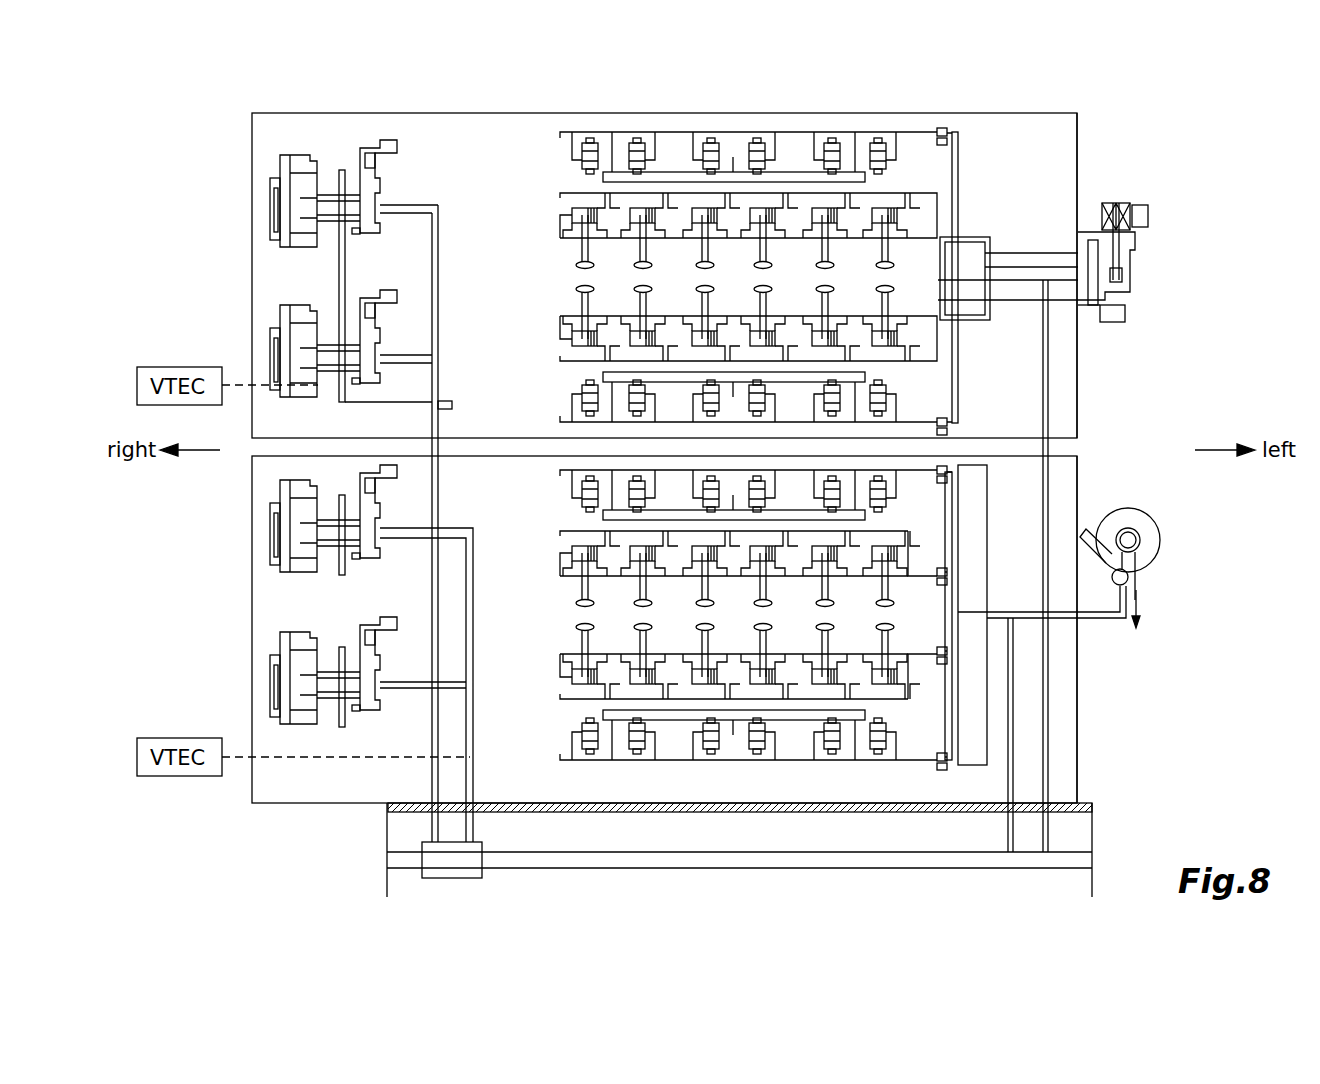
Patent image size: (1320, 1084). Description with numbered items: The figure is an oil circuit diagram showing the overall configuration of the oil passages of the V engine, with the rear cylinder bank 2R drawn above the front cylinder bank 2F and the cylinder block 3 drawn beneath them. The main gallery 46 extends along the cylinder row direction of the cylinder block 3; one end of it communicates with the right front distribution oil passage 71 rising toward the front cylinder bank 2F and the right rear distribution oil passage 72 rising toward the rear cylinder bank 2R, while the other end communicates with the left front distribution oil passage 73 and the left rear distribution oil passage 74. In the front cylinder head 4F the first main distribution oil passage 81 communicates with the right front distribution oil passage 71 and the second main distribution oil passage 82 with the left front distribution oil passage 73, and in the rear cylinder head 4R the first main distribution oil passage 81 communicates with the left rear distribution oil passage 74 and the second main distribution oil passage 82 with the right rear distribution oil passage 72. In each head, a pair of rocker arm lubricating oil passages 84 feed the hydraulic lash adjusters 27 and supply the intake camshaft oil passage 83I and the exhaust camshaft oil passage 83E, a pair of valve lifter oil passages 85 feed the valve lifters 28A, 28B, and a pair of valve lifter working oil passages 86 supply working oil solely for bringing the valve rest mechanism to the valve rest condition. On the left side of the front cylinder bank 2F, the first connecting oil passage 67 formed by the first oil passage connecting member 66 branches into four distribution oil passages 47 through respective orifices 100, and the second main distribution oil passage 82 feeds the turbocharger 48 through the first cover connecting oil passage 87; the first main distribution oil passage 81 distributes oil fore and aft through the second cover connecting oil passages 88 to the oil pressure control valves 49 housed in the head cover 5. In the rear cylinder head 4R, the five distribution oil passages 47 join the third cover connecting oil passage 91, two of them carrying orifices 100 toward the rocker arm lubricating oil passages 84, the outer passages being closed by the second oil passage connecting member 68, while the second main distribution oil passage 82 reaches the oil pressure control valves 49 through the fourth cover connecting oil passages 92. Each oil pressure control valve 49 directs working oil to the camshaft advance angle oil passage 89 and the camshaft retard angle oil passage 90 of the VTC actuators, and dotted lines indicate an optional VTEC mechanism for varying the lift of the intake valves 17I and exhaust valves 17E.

The rear cylinder bank 2R is at (1083, 128).
The front cylinder bank 2F is at (1086, 468).
The cylinder block 3 is at (1092, 830).
The rear cylinder head 4R is at (1080, 345).
The front cylinder head 4F is at (1080, 763).
The head cover 5 is at (710, 451).
The exhaust valve 17E is at (576, 265).
The intake valve 17I is at (576, 289).
The hydraulic lash adjuster 27 is at (757, 158).
The valve lifter 28A is at (700, 226).
The valve lifter 28B is at (700, 565).
The main gallery 46 is at (755, 853).
The distribution oil passage 47 is at (912, 138).
The turbocharger 48 is at (1150, 526).
The oil pressure control valve 49 is at (382, 192).
The first oil passage connecting member 66 is at (990, 518).
The first connecting oil passage 67 is at (974, 602).
The second oil passage connecting member 68 is at (348, 282).
The right front distribution oil passage 71 is at (473, 830).
The right rear distribution oil passage 72 is at (432, 833).
The left front distribution oil passage 73 is at (1008, 830).
The left rear distribution oil passage 74 is at (1043, 823).
The first main distribution oil passage 81 is at (1048, 402).
The second main distribution oil passage 82 is at (432, 422).
The exhaust camshaft oil passage 83E is at (603, 178).
The intake camshaft oil passage 83I is at (603, 379).
The rocker arm lubricating oil passage 84 is at (560, 133).
The valve lifter oil passage 85 is at (560, 238).
The valve lifter working oil passage 86 is at (560, 193).
The first cover connecting oil passage 87 is at (1063, 619).
The second cover connecting oil passage 88 is at (420, 703).
The camshaft advance angle oil passage 89 is at (325, 195).
The camshaft retard angle oil passage 90 is at (322, 232).
The third cover connecting oil passage 91 is at (985, 228).
The fourth cover connecting oil passage 92 is at (433, 197).
The orifice 100 is at (947, 132).